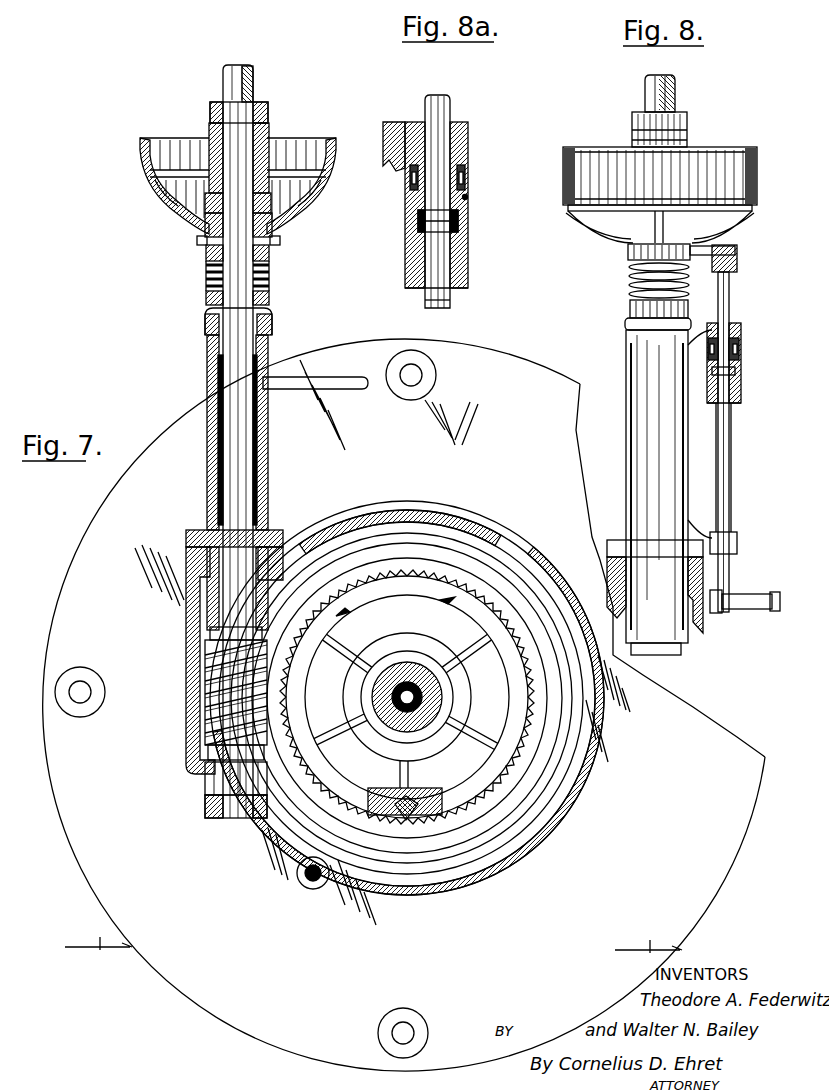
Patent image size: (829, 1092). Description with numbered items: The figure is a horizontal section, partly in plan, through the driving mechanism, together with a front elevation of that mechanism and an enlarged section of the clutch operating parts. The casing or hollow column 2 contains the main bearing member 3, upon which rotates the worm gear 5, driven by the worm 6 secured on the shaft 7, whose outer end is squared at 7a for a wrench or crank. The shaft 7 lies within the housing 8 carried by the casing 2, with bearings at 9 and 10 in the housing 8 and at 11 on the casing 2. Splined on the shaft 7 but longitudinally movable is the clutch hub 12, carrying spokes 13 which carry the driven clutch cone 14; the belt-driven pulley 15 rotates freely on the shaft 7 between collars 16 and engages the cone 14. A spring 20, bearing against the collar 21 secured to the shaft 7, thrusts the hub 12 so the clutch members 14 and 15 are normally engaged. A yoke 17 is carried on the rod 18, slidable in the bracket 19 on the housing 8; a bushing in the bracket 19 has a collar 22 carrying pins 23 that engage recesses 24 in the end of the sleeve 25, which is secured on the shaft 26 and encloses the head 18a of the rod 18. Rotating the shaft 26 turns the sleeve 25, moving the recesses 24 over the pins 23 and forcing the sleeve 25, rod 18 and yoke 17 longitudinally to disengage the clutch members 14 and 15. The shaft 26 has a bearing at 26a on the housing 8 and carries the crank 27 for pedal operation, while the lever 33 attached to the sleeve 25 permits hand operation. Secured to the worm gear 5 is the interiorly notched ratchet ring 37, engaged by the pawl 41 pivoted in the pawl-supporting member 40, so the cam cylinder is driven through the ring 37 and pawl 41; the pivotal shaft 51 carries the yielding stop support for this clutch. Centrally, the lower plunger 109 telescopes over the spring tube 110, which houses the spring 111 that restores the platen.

In FIG. 7, the casing or hollow column 2 is at (183, 636).
In FIG. 8, the casing or hollow column 2 is at (605, 566).
In FIG. 7, the main bearing member 3 is at (442, 708).
In FIG. 7, the worm gear 5 is at (272, 787).
In FIG. 7, the worm 6 is at (195, 710).
In FIG. 7, the shaft 7 is at (237, 435).
In FIG. 7, the squared outer end of shaft 7a is at (225, 72).
In FIG. 8, the squared outer end of shaft 7a is at (686, 94).
In FIG. 7, the housing 8 is at (207, 385).
In FIG. 8, the housing 8 is at (628, 365).
In FIG. 7, the bearing 9 is at (213, 333).
In FIG. 7, the bearing 10 is at (183, 540).
In FIG. 7, the bearing 11 is at (189, 778).
In FIG. 7, the clutch hub 12 is at (206, 252).
In FIG. 8, the clutch hub 12 is at (630, 256).
In FIG. 7, the spokes 13 is at (208, 224).
In FIG. 8, the spokes 13 is at (790, 233).
In FIG. 7, the driven clutch cone 14 is at (163, 194).
In FIG. 8, the driven clutch cone 14 is at (790, 210).
In FIG. 7, the driving clutch member or pulley 15 is at (143, 138).
In FIG. 8, the driving clutch member or pulley 15 is at (790, 173).
In FIG. 7, the collars 16 is at (210, 110).
In FIG. 8, the collars 16 is at (692, 122).
In FIG. 7, the yoke 17 is at (200, 240).
In FIG. 8, the yoke 17 is at (790, 261).
In FIG. 8A, the rod 18 is at (455, 106).
In FIG. 8, the rod 18 is at (731, 297).
In FIG. 8A, the head 18a is at (528, 249).
In FIG. 8, the head 18a is at (792, 391).
In FIG. 8A, the bracket 19 is at (468, 135).
In FIG. 8, the bracket 19 is at (790, 323).
In FIG. 7, the spring 20 is at (206, 270).
In FIG. 8, the spring 20 is at (630, 278).
In FIG. 7, the collar 21 is at (207, 296).
In FIG. 8, the collar 21 is at (630, 302).
In FIG. 8A, the collar 22 is at (470, 178).
In FIG. 8, the collar 22 is at (790, 345).
In FIG. 8A, the pins 23 is at (468, 188).
In FIG. 8, the pins 23 is at (790, 365).
In FIG. 8A, the recesses 24 is at (466, 199).
In FIG. 8A, the sleeve 25 is at (468, 288).
In FIG. 8, the sleeve 25 is at (790, 418).
In FIG. 8A, the shaft 26 is at (456, 313).
In FIG. 8, the shaft 26 is at (731, 455).
In FIG. 8, the bearing 26a is at (792, 545).
In FIG. 8, the crank 27 is at (790, 586).
In FIG. 7, the lever 33 is at (348, 368).
In FIG. 7, the ratchet ring 37 is at (450, 575).
In FIG. 7, the pawl-supporting member 40 is at (380, 800).
In FIG. 7, the pawl 41 is at (405, 806).
In FIG. 7, the pivotal shaft 51 is at (305, 880).
In FIG. 7, the tube or lower plunger 109 is at (410, 693).
In FIG. 7, the spring tube 110 is at (418, 690).
In FIG. 7, the spring 111 is at (400, 685).